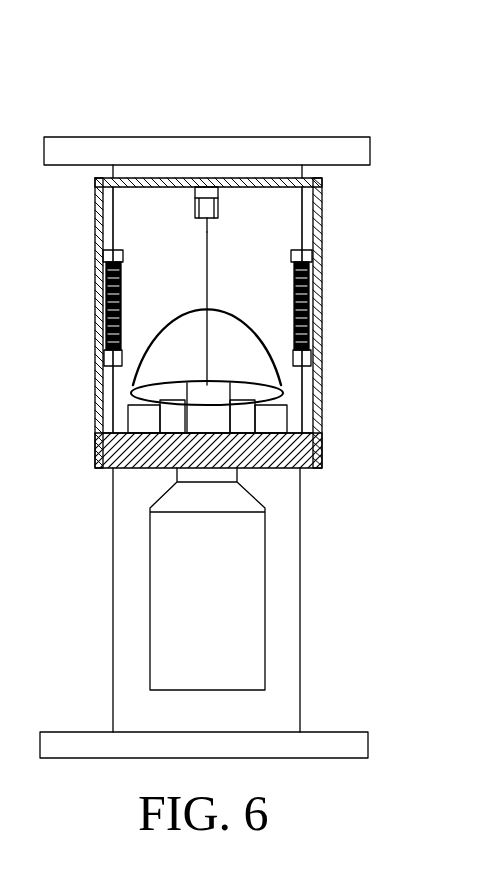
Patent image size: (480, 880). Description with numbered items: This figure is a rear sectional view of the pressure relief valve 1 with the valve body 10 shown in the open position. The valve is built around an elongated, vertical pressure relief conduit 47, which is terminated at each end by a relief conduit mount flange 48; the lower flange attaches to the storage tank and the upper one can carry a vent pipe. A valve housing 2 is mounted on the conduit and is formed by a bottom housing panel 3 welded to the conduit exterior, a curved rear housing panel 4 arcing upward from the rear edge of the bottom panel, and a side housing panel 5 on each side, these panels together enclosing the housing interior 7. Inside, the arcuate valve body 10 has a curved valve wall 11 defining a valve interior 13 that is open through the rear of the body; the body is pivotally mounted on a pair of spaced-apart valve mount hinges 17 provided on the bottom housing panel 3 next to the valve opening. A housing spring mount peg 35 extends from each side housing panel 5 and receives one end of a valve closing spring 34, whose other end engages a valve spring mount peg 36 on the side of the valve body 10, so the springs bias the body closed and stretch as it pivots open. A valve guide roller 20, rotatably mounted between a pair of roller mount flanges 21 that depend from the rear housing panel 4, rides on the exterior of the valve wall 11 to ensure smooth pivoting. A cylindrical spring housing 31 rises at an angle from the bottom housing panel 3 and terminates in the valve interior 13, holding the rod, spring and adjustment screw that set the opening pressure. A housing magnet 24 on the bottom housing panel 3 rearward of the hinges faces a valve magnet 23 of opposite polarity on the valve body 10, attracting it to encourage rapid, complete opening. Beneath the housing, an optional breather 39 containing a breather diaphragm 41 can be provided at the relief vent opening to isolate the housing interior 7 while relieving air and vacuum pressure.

The pressure relief valve 1 is at (5, 145).
The valve housing 2 is at (221, 306).
The bottom housing panel 3 is at (283, 470).
The rear housing panel 4 is at (258, 183).
The side housing panel 5 is at (95, 218).
The housing interior 7 is at (148, 210).
The valve body 10 is at (265, 233).
The valve wall 11 is at (302, 392).
The valve interior 13 is at (160, 400).
The valve mount hinges 17 is at (145, 418).
The valve guide roller 20 is at (206, 222).
The roller mount flanges 21 is at (220, 205).
The valve magnet 23 is at (247, 420).
The housing magnet 24 is at (300, 390).
The spring housing 31 is at (208, 397).
The valve closing spring 34 is at (106, 300).
The housing spring mount peg 35 is at (103, 254).
The valve spring mount peg 36 is at (104, 356).
The breather 39 is at (277, 578).
The breather diaphragm 41 is at (0, 557).
The pressure relief conduit 47 is at (100, 527).
The relief conduit mount flange 48 is at (113, 137).